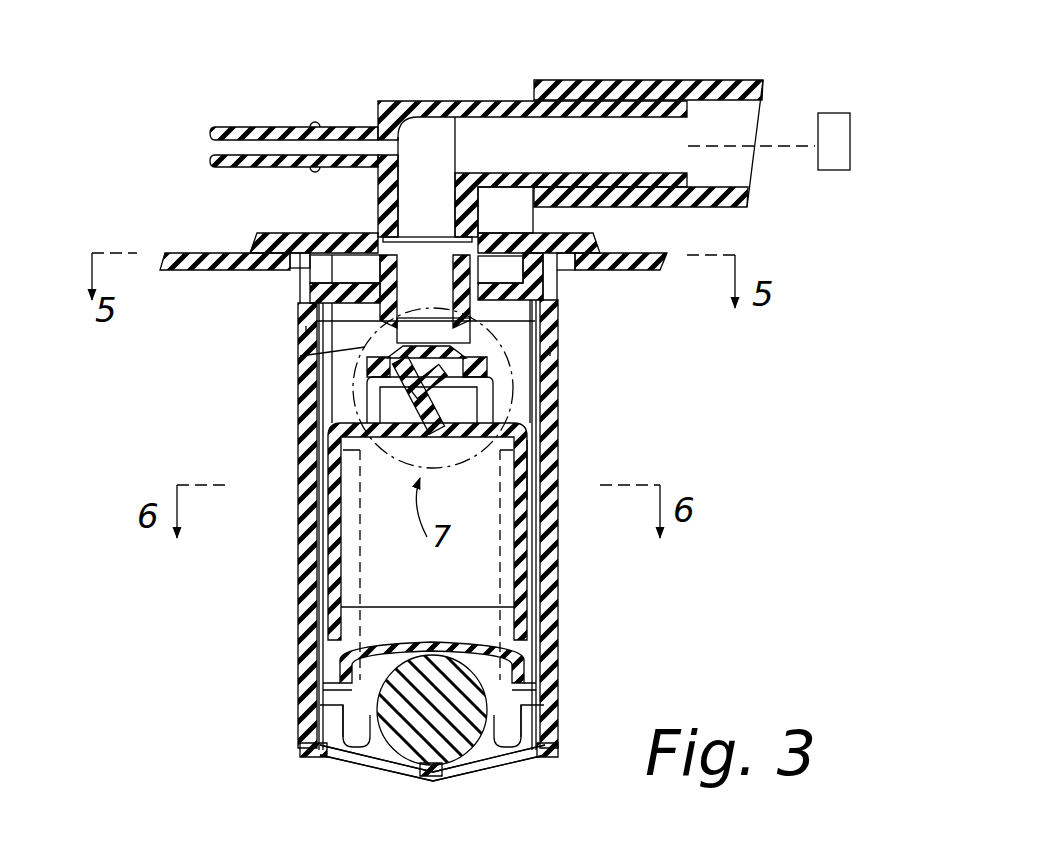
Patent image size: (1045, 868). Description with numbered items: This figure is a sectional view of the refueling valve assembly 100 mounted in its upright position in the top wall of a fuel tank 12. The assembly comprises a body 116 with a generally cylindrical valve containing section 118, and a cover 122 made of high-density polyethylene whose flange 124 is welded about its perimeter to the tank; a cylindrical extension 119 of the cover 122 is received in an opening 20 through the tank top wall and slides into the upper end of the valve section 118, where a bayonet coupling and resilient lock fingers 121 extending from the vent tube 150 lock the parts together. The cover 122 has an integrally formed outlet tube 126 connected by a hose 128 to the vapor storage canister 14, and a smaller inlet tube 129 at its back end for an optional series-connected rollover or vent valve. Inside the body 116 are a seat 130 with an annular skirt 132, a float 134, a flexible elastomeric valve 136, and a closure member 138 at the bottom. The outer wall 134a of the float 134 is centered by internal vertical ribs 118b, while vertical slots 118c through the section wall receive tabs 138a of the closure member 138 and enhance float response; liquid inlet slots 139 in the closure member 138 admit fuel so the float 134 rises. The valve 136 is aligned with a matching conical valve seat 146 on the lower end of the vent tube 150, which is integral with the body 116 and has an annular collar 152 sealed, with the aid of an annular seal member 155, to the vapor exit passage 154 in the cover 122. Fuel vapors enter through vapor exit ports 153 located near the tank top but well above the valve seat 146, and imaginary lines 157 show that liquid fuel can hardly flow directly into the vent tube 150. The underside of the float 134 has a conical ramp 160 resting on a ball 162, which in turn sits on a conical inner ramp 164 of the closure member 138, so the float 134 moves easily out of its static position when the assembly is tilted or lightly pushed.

The refueling valve assembly 100 is at (625, 60).
The fuel tank 12 is at (668, 258).
The vapor storage canister 14 is at (840, 112).
The opening 20 is at (288, 268).
The body 116 is at (567, 405).
The valve containing section 118 is at (545, 447).
The vertical ribs 118b is at (300, 310).
The vertical slots 118c is at (347, 692).
The cylindrical extension 119 is at (546, 295).
The resilient lock fingers 121 is at (345, 285).
The cover 122 is at (604, 227).
The flange 124 is at (266, 236).
The outlet tube 126 is at (443, 100).
The hose 128 is at (740, 92).
The inlet tube 129 is at (258, 133).
The seat 130 is at (368, 395).
The annular skirt 132 is at (400, 412).
The float 134 is at (330, 478).
The outer wall 134a is at (528, 487).
The valve 136 is at (390, 362).
The closure member 138 is at (308, 757).
The tabs 138a is at (344, 708).
The liquid inlet slots 139 is at (370, 762).
The conical valve seat 146 is at (390, 345).
The vent tube 150 is at (398, 335).
The annular collar 152 is at (462, 232).
The vapor exit ports 153 is at (306, 330).
The vapor exit passage 154 is at (430, 150).
The annular seal member 155 is at (376, 237).
The imaginary lines 157 is at (300, 356).
The conical surface or ramp 160 is at (458, 655).
The ball 162 is at (410, 655).
The conical inner surface or ramp 164 is at (410, 770).